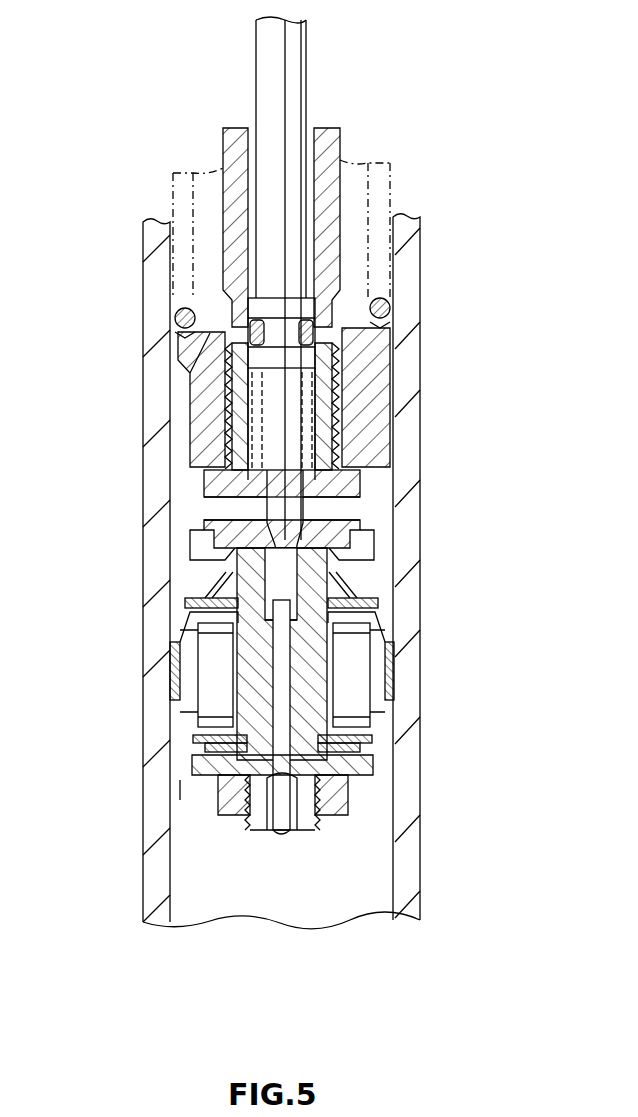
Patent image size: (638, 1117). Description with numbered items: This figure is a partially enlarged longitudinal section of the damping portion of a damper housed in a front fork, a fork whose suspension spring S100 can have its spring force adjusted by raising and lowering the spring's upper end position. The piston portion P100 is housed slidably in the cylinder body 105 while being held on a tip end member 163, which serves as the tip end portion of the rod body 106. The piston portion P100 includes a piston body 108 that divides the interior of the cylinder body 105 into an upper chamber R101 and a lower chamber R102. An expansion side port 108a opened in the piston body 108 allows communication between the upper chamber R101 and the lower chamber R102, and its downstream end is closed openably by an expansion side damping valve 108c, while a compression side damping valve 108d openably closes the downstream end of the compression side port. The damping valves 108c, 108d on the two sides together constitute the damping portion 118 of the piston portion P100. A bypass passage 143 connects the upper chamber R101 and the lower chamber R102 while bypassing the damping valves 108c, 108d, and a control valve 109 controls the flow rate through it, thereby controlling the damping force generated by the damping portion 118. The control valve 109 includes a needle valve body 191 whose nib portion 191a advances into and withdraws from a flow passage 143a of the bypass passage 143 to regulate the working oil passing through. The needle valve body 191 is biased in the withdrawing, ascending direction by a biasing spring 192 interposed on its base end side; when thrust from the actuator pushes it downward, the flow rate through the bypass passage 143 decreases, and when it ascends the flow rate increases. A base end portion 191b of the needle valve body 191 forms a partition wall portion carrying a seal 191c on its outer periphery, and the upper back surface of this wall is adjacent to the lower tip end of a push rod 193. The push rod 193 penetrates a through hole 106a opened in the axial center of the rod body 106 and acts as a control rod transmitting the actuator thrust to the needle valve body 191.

The push rod 193 is at (307, 72).
The through hole 106a is at (255, 137).
The rod body 106 is at (340, 147).
The base end portion 191b is at (255, 307).
The suspension spring S100 is at (391, 305).
The seal 191c is at (250, 335).
The biasing spring 192 is at (233, 345).
The tip end member 163 is at (393, 418).
The needle valve body 191 is at (260, 450).
The upper chamber R101 is at (392, 480).
The control valve 109 is at (262, 507).
The bypass passage 143 is at (372, 508).
The cylinder body 105 is at (407, 547).
The nib portion 191a is at (275, 545).
The flow passage 143a is at (287, 603).
The compression side damping valve 108d is at (350, 710).
The piston body 108 is at (196, 653).
The expansion side port 108a is at (218, 677).
The damping portion 118 is at (523, 588).
The expansion side damping valve 108c is at (373, 745).
The piston portion P100 is at (205, 788).
The lower chamber R102 is at (312, 882).